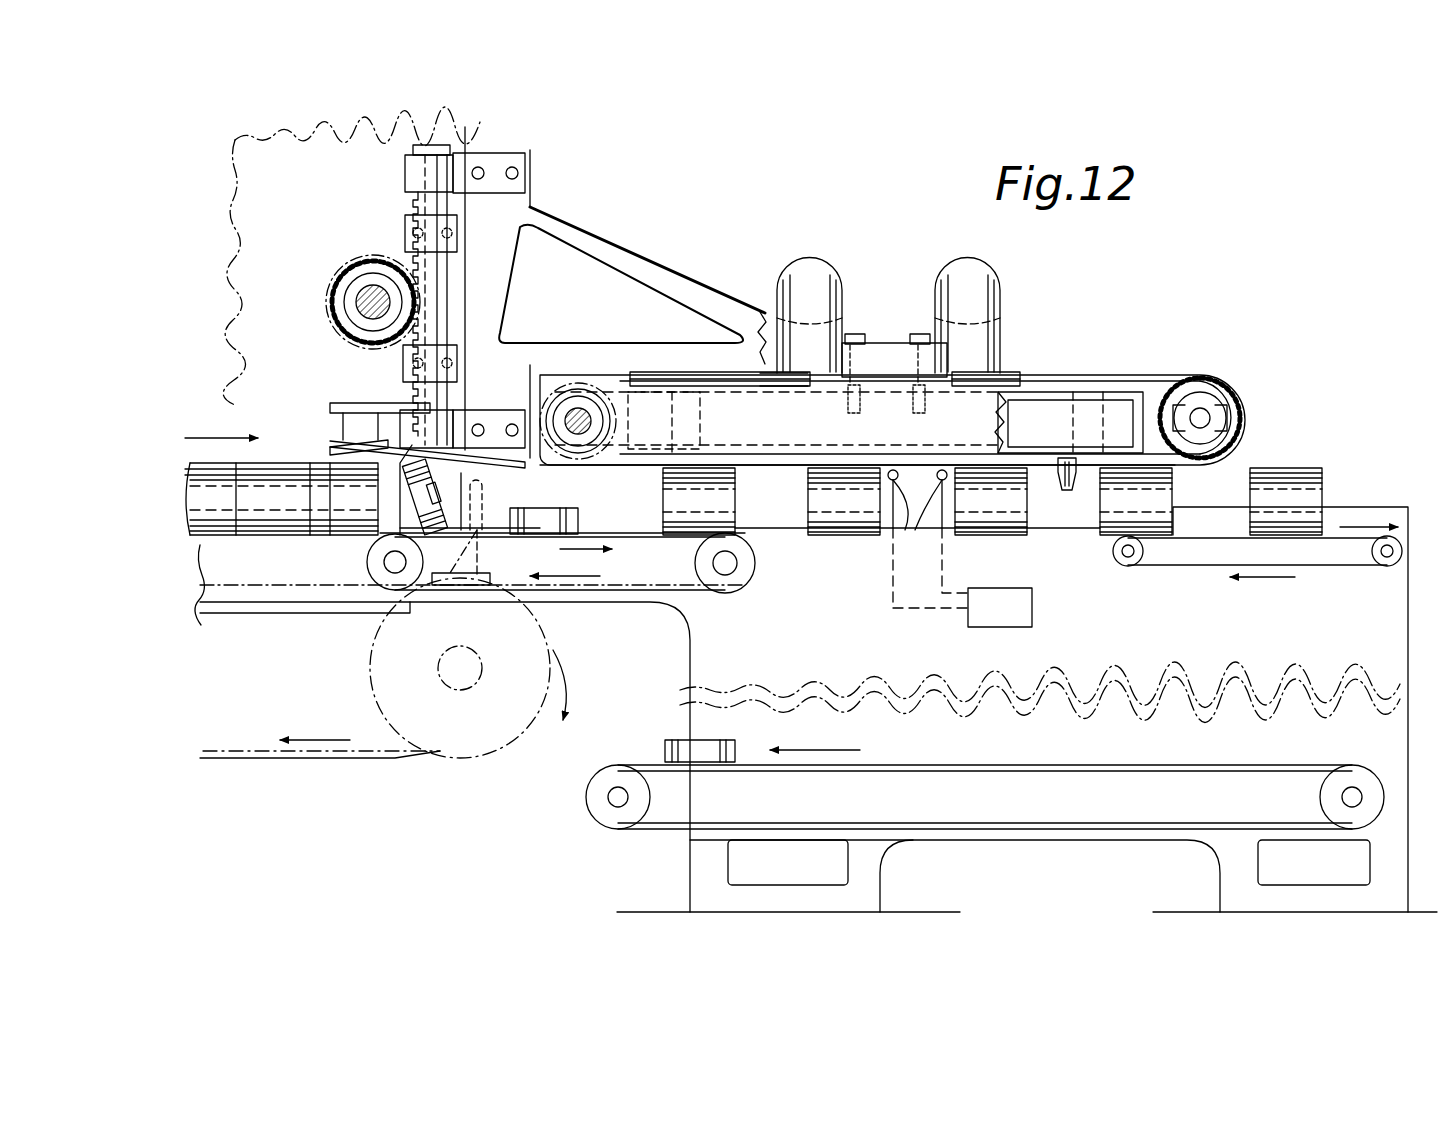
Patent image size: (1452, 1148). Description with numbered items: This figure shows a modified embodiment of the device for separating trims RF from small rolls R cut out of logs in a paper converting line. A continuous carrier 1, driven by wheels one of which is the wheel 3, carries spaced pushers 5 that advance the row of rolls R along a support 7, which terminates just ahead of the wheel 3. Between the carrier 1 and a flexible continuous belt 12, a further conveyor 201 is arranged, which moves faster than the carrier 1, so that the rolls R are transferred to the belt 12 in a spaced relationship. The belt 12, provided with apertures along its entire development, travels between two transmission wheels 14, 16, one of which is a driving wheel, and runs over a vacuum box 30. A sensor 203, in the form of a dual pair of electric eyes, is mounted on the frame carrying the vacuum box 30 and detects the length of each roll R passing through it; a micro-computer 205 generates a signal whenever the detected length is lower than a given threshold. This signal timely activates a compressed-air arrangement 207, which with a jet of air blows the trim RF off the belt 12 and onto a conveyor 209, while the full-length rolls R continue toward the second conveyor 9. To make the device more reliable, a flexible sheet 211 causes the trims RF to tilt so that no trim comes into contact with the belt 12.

The continuous carrier 1 is at (390, 755).
The wheel 3 is at (370, 672).
The pusher 5 is at (478, 558).
The support 7 is at (215, 562).
The second conveyor 9 is at (1205, 565).
The continuous belt 12 is at (748, 464).
The transmission wheel 14 is at (1245, 420).
The transmission wheel 16 is at (578, 388).
The vacuum box 30 is at (640, 400).
The further conveyor 201 is at (630, 584).
The sensor 203 is at (928, 539).
The micro-computer 205 is at (987, 617).
The compressed-air arrangement 207 is at (1065, 490).
The conveyor 209 is at (1037, 760).
The flexible sheet 211 is at (495, 450).
The small rolls R is at (330, 470).
The trims RF is at (395, 492).